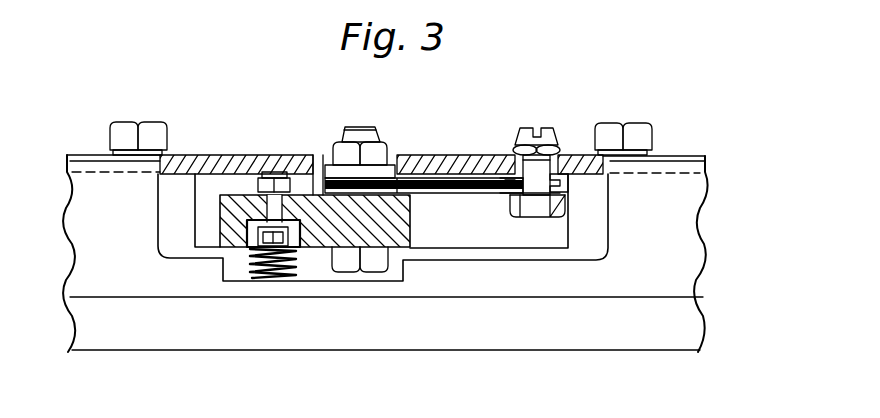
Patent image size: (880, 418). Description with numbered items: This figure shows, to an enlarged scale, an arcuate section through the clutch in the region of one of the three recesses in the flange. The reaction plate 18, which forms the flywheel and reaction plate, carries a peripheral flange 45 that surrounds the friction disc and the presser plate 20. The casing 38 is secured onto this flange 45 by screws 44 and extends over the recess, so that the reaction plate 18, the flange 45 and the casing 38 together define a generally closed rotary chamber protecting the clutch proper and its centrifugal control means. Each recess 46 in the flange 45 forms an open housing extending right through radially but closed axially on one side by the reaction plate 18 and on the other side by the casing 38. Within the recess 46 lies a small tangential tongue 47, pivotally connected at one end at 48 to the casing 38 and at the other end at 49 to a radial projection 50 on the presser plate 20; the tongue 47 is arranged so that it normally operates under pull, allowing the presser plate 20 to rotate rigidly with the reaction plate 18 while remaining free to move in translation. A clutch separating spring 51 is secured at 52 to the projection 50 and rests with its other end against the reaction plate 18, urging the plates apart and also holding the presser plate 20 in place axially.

The reaction plate 18 is at (286, 352).
The presser plate 20 is at (203, 199).
The casing 38 is at (443, 156).
The screws 44 is at (150, 134).
The peripheral flange 45 is at (92, 168).
The recess 46 is at (603, 251).
The tangential tongue 47 is at (473, 182).
The pivotal connection to casing 48 is at (543, 140).
The pivotal connection to projection 49 is at (367, 177).
The radial projection 50 is at (302, 205).
The clutch separating spring 51 is at (258, 280).
The spring securing point 52 is at (250, 214).